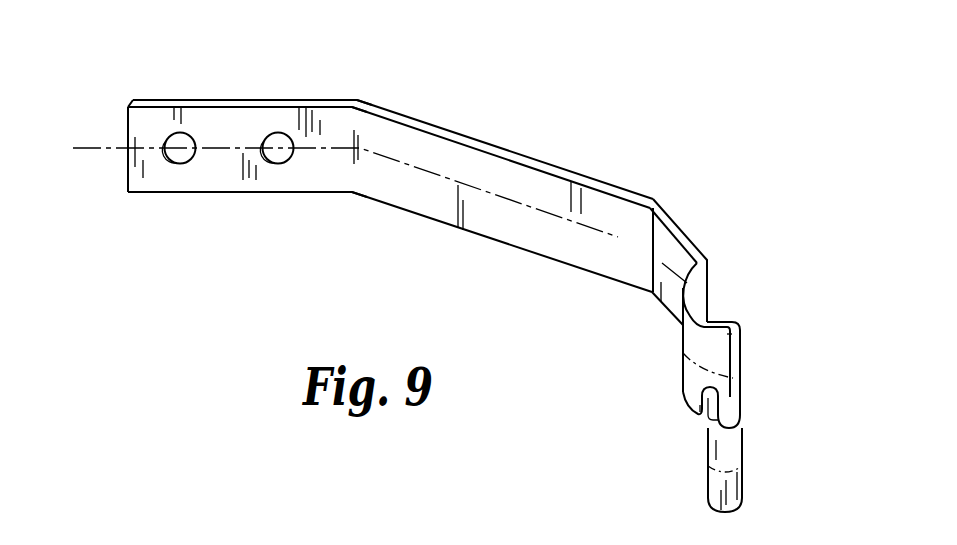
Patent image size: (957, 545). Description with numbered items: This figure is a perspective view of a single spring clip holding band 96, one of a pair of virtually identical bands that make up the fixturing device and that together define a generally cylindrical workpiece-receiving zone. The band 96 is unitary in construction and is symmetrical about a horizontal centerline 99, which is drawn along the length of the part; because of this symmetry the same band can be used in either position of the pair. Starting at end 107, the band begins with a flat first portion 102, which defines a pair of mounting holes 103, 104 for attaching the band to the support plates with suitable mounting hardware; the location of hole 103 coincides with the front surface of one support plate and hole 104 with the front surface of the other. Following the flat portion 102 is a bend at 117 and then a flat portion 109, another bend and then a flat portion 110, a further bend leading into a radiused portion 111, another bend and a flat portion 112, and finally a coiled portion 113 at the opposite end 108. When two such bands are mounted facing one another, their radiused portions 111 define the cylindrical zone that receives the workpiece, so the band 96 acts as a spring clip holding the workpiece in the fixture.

The spring clip holding band 96 is at (728, 156).
The horizontal centerline 99 is at (221, 148).
The first portion 102 is at (162, 101).
The mounting hole 103 is at (173, 160).
The mounting hole 104 is at (278, 153).
The end 107 is at (127, 125).
The end 108 is at (703, 389).
The flat portion 109 is at (552, 163).
The flat portion 110 is at (673, 252).
The radiused portion 111 is at (696, 307).
The flat portion 112 is at (744, 380).
The coiled portion 113 is at (742, 500).
The first bend 117 is at (358, 100).